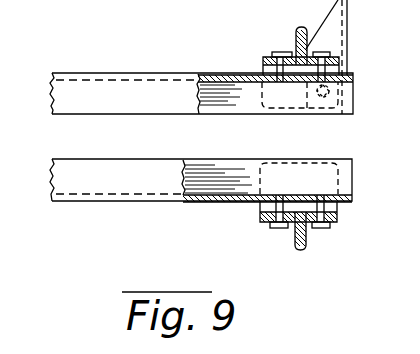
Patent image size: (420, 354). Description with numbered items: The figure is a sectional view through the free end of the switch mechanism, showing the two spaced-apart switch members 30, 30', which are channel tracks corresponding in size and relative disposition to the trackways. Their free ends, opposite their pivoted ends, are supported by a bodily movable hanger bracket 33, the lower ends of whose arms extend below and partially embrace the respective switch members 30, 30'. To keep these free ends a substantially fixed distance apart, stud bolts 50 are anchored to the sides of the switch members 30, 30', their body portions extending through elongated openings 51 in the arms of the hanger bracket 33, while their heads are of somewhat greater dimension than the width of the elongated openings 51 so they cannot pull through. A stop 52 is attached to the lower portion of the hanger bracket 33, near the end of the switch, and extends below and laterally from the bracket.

The switch member 30 is at (201, 77).
The switch member 30' is at (201, 197).
The hanger bracket 33 is at (310, 227).
The stud bolt 50 is at (282, 52).
The elongated opening 51 is at (265, 57).
The stop 52 is at (348, 26).